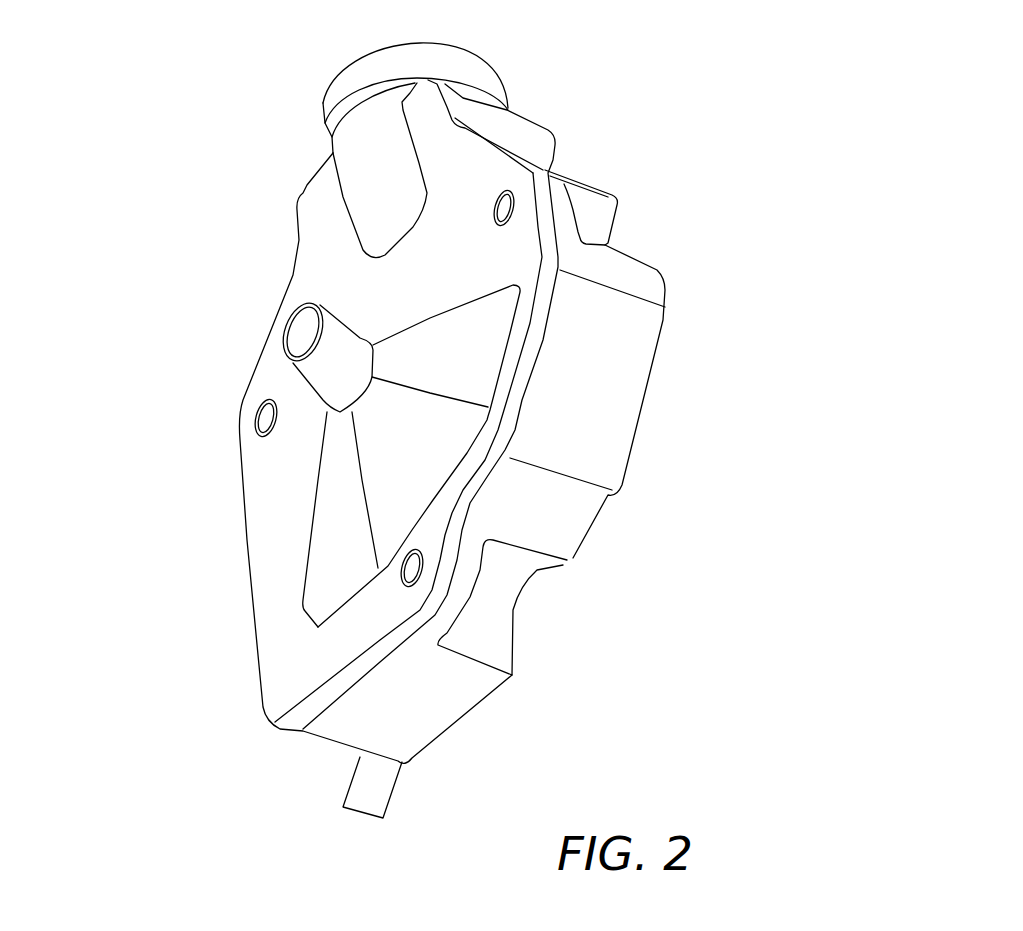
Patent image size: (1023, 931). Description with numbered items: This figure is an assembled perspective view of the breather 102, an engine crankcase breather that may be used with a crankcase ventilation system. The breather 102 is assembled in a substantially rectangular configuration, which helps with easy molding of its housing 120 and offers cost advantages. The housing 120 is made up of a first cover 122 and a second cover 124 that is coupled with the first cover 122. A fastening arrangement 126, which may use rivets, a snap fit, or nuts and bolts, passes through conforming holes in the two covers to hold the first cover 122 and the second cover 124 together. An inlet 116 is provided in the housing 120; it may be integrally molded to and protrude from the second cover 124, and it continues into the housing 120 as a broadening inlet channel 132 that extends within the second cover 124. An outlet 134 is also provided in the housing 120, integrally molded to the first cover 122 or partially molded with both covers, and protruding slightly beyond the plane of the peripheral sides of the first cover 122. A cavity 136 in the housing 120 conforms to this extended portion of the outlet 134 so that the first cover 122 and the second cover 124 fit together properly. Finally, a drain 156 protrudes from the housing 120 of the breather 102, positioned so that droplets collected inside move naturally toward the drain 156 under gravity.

The breather 102 is at (880, 105).
The housing 120 is at (288, 205).
The outlet 134 is at (362, 68).
The cavity 136 is at (360, 153).
The inlet 116 is at (300, 338).
The fastening arrangement 126 is at (512, 190).
The first cover 122 is at (260, 477).
The inlet channel 132 is at (335, 503).
The second cover 124 is at (648, 378).
The drain 156 is at (362, 807).